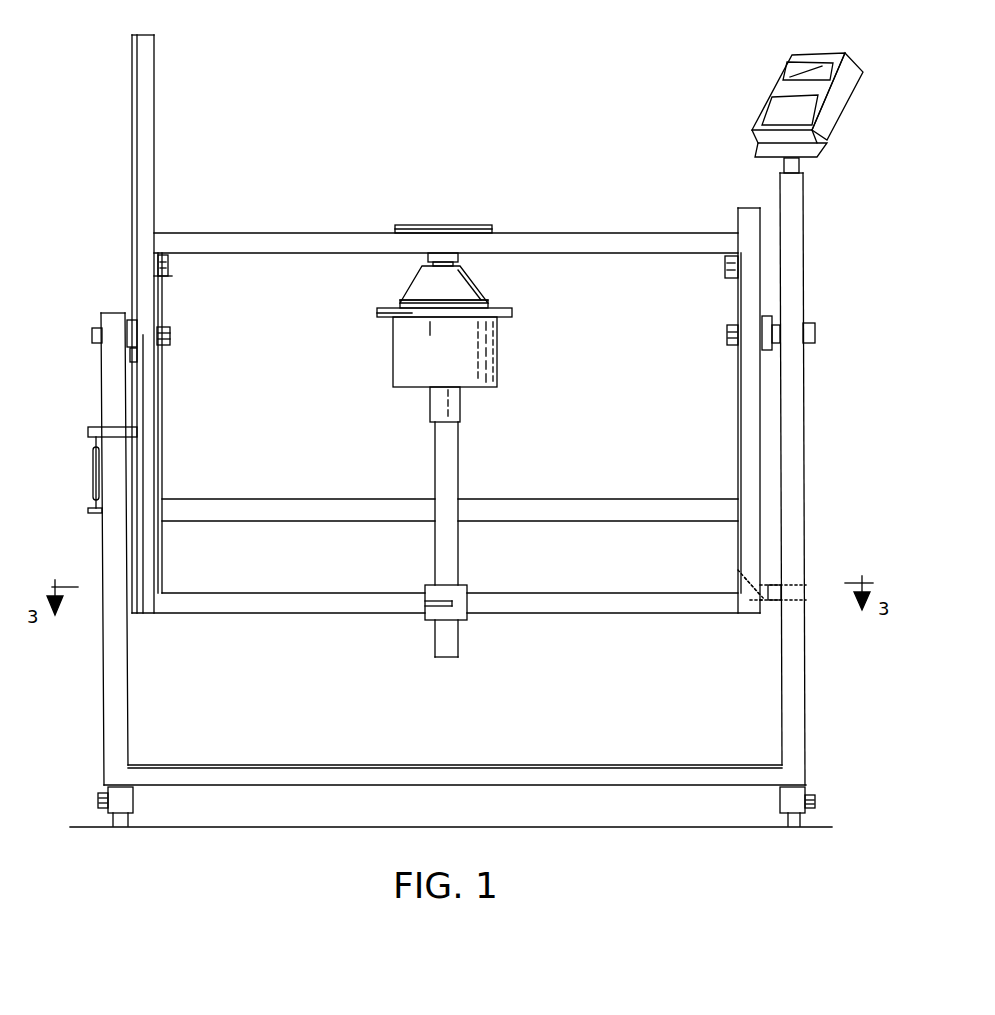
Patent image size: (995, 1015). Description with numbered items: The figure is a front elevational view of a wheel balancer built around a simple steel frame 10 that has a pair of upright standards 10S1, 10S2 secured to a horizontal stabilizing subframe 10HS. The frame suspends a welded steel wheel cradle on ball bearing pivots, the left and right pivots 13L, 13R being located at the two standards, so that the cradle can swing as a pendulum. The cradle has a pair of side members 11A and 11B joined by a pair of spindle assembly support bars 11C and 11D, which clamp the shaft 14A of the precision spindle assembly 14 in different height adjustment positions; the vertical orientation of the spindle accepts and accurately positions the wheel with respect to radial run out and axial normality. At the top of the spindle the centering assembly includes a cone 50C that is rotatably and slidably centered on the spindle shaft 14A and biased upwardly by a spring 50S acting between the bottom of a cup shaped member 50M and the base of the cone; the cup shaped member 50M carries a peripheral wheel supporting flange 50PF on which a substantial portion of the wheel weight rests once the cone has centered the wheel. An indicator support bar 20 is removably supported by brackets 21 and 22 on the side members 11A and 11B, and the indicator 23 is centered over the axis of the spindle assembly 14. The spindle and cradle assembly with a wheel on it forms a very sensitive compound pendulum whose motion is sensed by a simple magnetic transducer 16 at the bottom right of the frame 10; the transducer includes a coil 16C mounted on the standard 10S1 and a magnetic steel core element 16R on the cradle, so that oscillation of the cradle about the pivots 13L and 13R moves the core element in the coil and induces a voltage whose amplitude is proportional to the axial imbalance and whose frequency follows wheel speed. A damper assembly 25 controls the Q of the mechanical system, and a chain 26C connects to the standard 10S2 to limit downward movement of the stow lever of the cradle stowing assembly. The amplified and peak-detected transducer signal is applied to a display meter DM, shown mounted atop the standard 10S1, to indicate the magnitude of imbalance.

The steel frame 10 is at (825, 454).
The horizontal stabilizing subframe 10HS is at (470, 768).
The upright standard 10S1 is at (800, 252).
The upright standard 10S2 is at (118, 730).
The side member 11A is at (157, 398).
The side member 11B is at (736, 372).
The spindle assembly support bar 11C is at (623, 612).
The spindle assembly support bar 11D is at (576, 506).
The pivot 13L is at (91, 334).
The pivot 13R is at (812, 325).
The spindle assembly 14 is at (519, 284).
The spindle shaft 14A is at (446, 485).
The magnetic transducer 16 is at (821, 568).
The coil 16C is at (758, 605).
The magnetic steel core element 16R is at (743, 582).
The indicator support bar 20 is at (565, 233).
The bracket 21 is at (172, 266).
The bracket 22 is at (727, 271).
The indicator 23 is at (437, 224).
The damper assembly 25 is at (106, 284).
The chain 26C is at (93, 496).
The cone 50C is at (428, 279).
The spring 50S is at (493, 309).
The peripheral wheel supporting flange 50PF is at (385, 313).
The cup shaped member 50M is at (486, 370).
The display meter DM is at (760, 74).